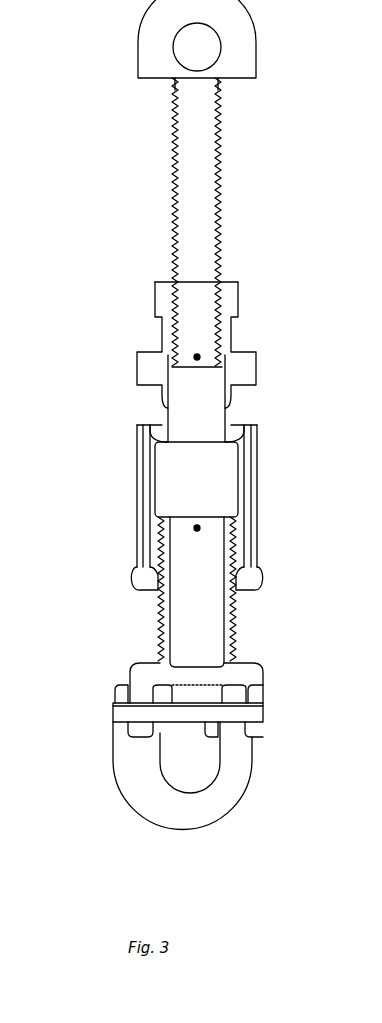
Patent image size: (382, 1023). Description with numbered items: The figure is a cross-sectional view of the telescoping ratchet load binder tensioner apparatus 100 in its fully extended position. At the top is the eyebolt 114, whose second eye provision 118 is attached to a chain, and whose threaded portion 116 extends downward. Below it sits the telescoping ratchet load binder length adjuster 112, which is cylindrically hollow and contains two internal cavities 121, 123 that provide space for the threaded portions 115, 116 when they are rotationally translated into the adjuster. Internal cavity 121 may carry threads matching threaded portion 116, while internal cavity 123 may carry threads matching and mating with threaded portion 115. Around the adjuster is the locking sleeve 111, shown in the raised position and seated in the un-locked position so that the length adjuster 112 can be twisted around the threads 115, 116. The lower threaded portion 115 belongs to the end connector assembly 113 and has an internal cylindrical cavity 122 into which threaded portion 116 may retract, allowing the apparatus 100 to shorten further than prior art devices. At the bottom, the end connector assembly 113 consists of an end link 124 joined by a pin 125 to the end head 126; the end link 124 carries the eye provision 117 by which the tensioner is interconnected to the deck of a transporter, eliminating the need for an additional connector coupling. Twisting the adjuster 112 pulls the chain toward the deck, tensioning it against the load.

The telescoping ratchet load binder tensioner apparatus 100 is at (116, 190).
The eyebolt 114 is at (155, 48).
The second eye provision 118 is at (200, 45).
The threaded portion 116 is at (217, 143).
The telescoping ratchet load binder length adjuster 112 is at (160, 403).
The internal cavity 121 is at (193, 407).
The locking sleeve 111 is at (132, 503).
The internal cavity 123 is at (212, 477).
The threaded portion 115 is at (160, 642).
The internal cylindrical cavity 122 is at (189, 628).
The pin 125 is at (112, 716).
The end head 126 is at (233, 672).
The end connector assembly 113 is at (245, 752).
The end link 124 is at (132, 773).
The eye provision 117 is at (192, 770).